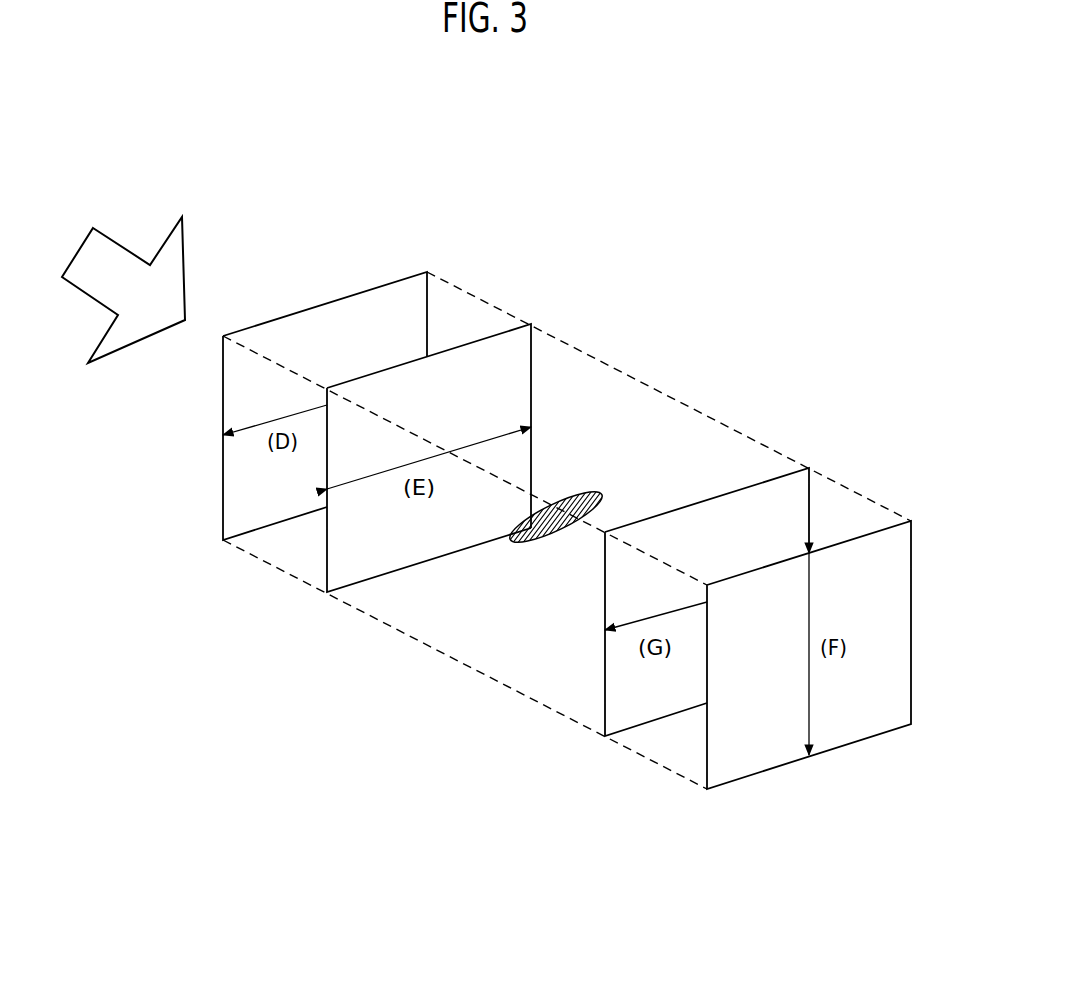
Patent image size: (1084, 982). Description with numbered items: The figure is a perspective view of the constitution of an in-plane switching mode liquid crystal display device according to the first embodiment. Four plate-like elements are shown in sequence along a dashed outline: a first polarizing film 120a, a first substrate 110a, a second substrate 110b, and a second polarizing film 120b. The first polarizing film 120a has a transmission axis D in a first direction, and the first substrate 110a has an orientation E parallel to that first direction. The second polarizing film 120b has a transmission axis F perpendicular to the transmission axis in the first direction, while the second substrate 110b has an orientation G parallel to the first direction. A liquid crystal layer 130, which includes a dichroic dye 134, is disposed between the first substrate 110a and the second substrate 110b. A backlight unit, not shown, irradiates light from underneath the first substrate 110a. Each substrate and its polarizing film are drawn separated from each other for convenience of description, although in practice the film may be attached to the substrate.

The first polarizing film 120a is at (393, 274).
The first substrate 110a is at (497, 328).
The liquid crystal layer 130 is at (808, 464).
The second substrate 110b is at (773, 480).
The second polarizing film 120b is at (877, 529).
The dichroic dye 134 is at (542, 548).